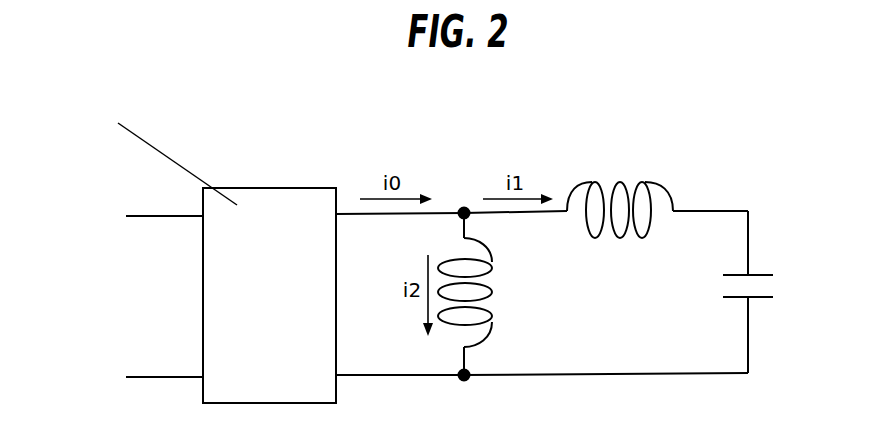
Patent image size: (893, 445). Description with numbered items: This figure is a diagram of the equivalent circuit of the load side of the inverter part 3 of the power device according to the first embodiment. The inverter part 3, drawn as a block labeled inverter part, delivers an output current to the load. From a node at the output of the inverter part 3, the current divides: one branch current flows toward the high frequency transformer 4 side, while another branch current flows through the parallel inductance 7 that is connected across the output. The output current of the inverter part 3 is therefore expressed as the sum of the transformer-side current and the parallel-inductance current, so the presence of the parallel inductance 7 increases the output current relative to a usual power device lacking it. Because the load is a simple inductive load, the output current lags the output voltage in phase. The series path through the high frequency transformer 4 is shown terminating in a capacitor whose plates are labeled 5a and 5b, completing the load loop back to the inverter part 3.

The inverter part 3 is at (268, 188).
The high frequency transformer 4 is at (605, 182).
The parallel inductance 7 is at (493, 283).
The capacitor plate / electrode 5a is at (763, 272).
The capacitor plate / electrode 5b is at (767, 300).